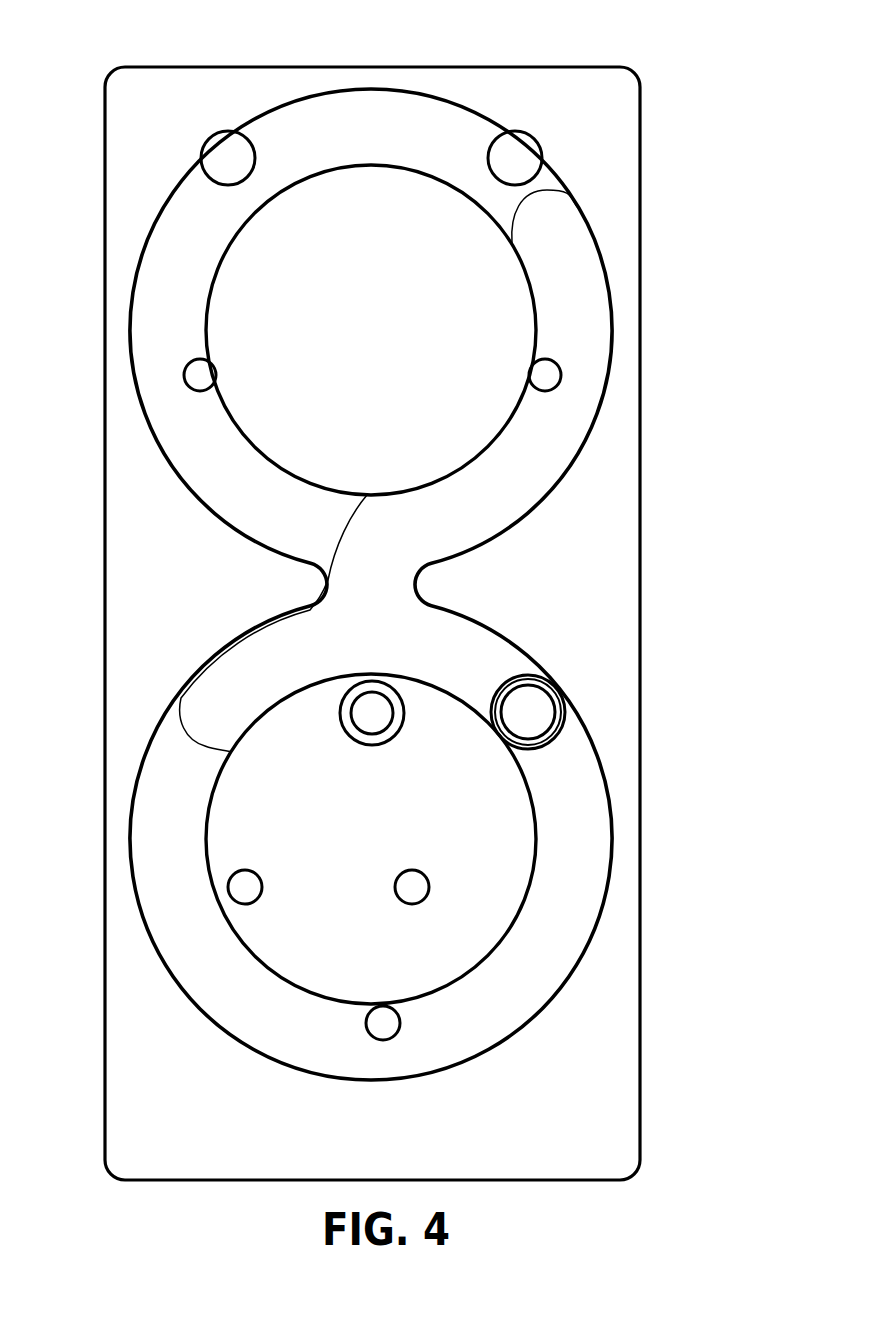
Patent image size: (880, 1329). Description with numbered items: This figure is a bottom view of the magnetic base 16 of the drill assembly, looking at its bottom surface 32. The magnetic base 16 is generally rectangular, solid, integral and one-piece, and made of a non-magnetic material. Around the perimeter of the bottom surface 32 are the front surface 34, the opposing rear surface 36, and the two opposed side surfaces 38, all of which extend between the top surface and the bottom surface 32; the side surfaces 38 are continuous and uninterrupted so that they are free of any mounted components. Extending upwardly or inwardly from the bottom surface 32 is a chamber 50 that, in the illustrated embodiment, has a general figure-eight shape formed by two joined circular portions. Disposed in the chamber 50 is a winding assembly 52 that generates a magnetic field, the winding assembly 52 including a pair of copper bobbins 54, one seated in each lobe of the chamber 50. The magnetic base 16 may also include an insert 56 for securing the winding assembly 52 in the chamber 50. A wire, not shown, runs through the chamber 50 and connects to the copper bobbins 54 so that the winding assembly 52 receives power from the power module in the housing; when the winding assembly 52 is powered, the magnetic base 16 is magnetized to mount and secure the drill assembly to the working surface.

The magnetic base 16 is at (725, 87).
The bottom surface 32 is at (615, 540).
The front surface 34 is at (503, 67).
The rear surface 36 is at (537, 1182).
The side surfaces 38 is at (105, 800).
The chamber 50 is at (603, 842).
The winding assembly 52 is at (146, 238).
The copper bobbin 54 is at (283, 127).
The insert 56 is at (507, 670).